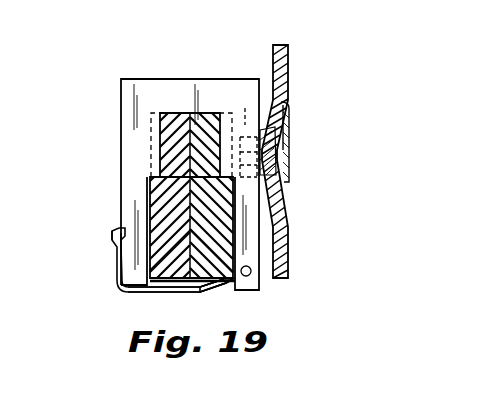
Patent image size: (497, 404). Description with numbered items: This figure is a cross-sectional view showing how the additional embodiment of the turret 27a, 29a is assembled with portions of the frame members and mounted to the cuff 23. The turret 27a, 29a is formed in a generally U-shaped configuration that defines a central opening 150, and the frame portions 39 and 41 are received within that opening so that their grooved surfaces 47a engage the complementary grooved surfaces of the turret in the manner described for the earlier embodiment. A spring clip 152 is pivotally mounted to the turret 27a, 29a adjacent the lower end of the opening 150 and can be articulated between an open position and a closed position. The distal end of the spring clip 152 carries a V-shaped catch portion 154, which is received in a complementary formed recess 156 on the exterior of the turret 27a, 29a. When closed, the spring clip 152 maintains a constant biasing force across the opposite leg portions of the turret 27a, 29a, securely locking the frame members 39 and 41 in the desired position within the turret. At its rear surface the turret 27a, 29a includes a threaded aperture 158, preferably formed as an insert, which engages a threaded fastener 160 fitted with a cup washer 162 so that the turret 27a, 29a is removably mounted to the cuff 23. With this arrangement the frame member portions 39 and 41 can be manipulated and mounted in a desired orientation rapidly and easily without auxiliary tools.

The turret 27a is at (167, 93).
The turret 29a is at (167, 93).
The frame portion 39 is at (150, 196).
The frame portion 41 is at (220, 224).
The hidden block edge 47a is at (230, 137).
The threaded aperture 158 is at (233, 132).
The cup washer 162 is at (290, 110).
The threaded fastener 160 is at (285, 147).
The cuff 23 is at (290, 265).
The V-shaped catch portion 154 is at (110, 245).
The recess 156 is at (110, 258).
The spring clip 152 is at (140, 294).
The central opening 150 is at (222, 292).